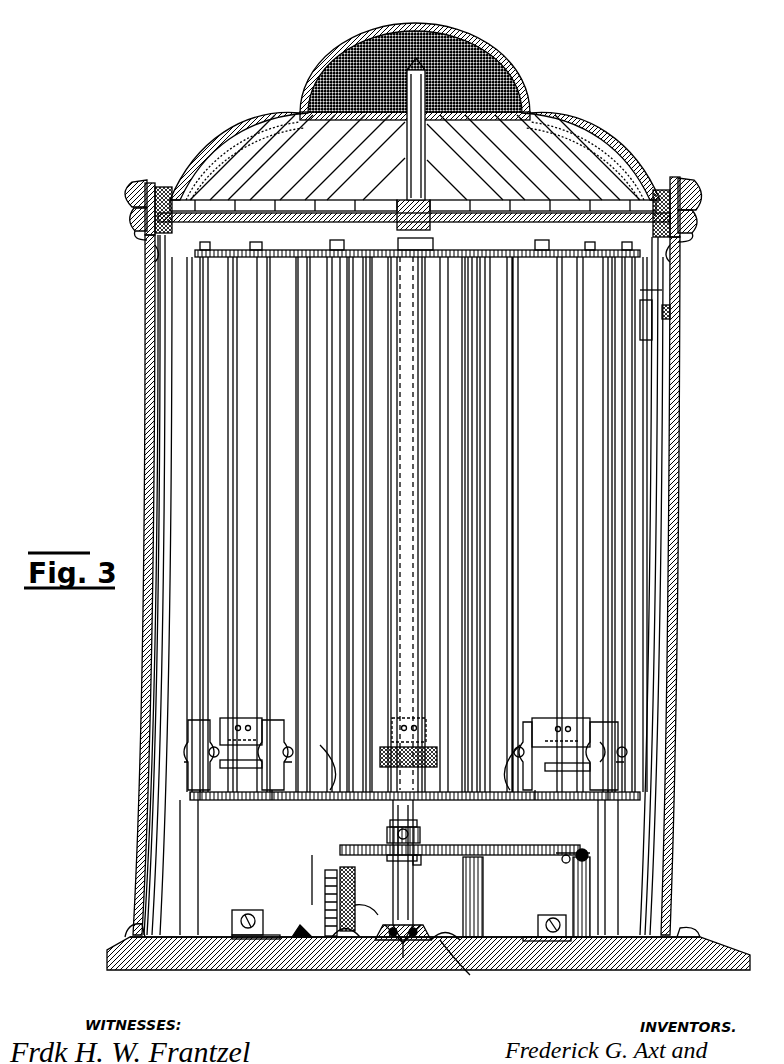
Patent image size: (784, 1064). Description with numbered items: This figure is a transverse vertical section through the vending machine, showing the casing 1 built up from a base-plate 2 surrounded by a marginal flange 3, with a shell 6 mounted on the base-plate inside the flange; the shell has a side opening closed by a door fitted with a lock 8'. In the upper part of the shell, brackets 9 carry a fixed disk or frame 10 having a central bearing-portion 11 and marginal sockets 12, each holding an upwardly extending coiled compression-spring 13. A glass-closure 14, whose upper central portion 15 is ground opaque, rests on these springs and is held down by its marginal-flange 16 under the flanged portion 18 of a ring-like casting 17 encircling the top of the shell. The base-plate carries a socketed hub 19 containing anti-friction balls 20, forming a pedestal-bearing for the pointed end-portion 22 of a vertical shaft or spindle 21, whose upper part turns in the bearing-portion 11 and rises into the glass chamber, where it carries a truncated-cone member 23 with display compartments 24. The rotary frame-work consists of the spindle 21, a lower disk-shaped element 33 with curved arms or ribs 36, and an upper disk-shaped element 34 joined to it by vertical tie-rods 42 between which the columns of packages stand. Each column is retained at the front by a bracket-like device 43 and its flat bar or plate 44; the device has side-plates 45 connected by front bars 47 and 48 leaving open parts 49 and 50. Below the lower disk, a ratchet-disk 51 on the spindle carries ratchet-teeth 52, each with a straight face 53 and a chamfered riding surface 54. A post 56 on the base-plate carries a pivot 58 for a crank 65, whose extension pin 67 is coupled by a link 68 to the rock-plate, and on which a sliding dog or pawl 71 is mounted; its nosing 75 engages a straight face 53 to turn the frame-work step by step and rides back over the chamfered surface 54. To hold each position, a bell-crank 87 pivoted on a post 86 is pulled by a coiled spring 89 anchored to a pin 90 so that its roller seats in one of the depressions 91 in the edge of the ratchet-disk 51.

The casing 1 is at (381, 585).
The base-plate 2 is at (700, 950).
The marginal flange 3 is at (128, 930).
The shell 6 is at (146, 356).
The lock 8' is at (682, 315).
The brackets 9 is at (152, 258).
The disk or frame 10 is at (496, 215).
The bearing-portion 11 is at (433, 215).
The marginal sockets 12 is at (130, 217).
The coiled compression-spring 13 is at (128, 190).
The glass-closure 14 is at (592, 124).
The upper central portion 15 is at (482, 62).
The marginal-flange 16 is at (150, 186).
The ring-like element or casting 17 is at (134, 236).
The flanged portion 18 is at (164, 186).
The socketed hub 19 is at (440, 946).
The anti-friction balls 20 is at (398, 948).
The vertical shaft or spindle 21 is at (390, 160).
The pointed end-portion 22 is at (404, 960).
The element or member 23 is at (445, 190).
The compartments 24 is at (248, 140).
The lower disk-shaped element 33 is at (220, 805).
The upper disk-shaped element 34 is at (300, 250).
The curved arms or ribs 36 is at (330, 744).
The vertical tie-rods 42 is at (335, 436).
The bracket-like devices 43 is at (399, 707).
The flat bar or plate 44 is at (428, 278).
The side-plates 45 is at (275, 792).
The front-plate or bar 47 is at (225, 722).
The front-plate or bar 48 is at (190, 766).
The open part 49 is at (205, 752).
The open part 50 is at (225, 770).
The ratchet-disk 51 is at (470, 857).
The ratchet-teeth or lugs 52 is at (387, 838).
The vertical and straight face 53 is at (394, 861).
The chamfered riding surface 54 is at (421, 860).
The bracket or post 56 is at (312, 912).
The pivot or pin 58 is at (364, 899).
The crank 65 is at (325, 888).
The pivot or pin 67 is at (362, 947).
The link 68 is at (335, 947).
The actuating dog or pawl 71 is at (366, 916).
The nosing or projection 75 is at (311, 866).
The post 86 is at (483, 912).
The bell-crank 87 is at (485, 864).
The coiled spring 89 is at (553, 915).
The pin or post 90 is at (588, 902).
The depressions 91 is at (390, 850).